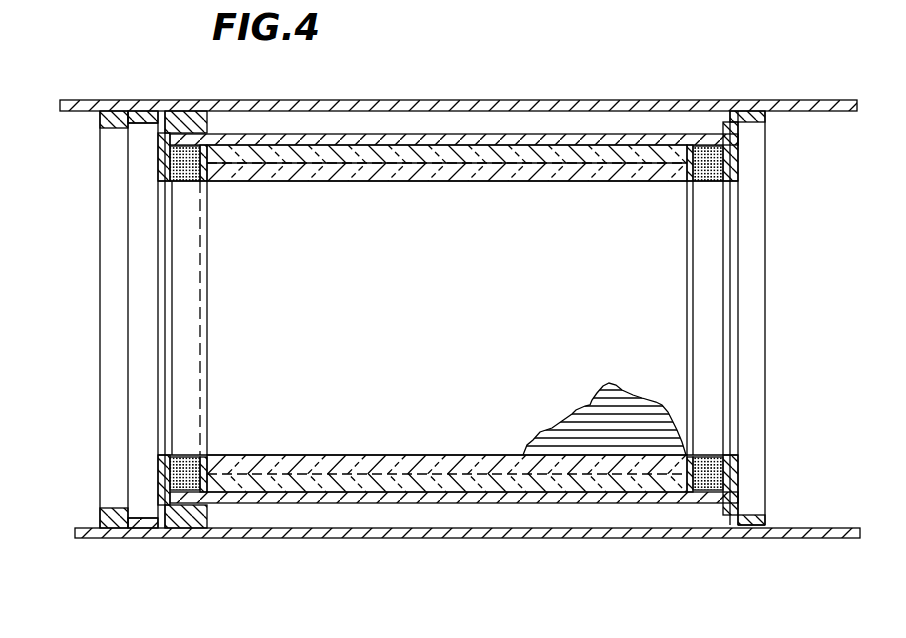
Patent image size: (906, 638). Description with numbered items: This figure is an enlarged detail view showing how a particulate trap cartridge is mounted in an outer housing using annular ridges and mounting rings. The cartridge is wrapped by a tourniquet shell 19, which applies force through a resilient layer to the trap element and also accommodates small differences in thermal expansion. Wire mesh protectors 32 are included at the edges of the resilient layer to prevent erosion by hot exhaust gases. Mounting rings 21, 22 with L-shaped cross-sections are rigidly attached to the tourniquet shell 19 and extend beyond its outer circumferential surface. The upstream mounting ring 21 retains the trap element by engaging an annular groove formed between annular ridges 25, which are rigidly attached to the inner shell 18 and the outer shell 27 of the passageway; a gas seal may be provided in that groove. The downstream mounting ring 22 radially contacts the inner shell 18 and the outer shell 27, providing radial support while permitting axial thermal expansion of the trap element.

The inner shell 18 is at (650, 99).
The tourniquet shell 19 is at (527, 505).
The mounting ring 21 is at (147, 531).
The downstream mounting ring 22 is at (755, 104).
The annular ridges 25 is at (106, 121).
The outer shell 27 is at (757, 538).
The wire mesh protectors 32 is at (166, 165).